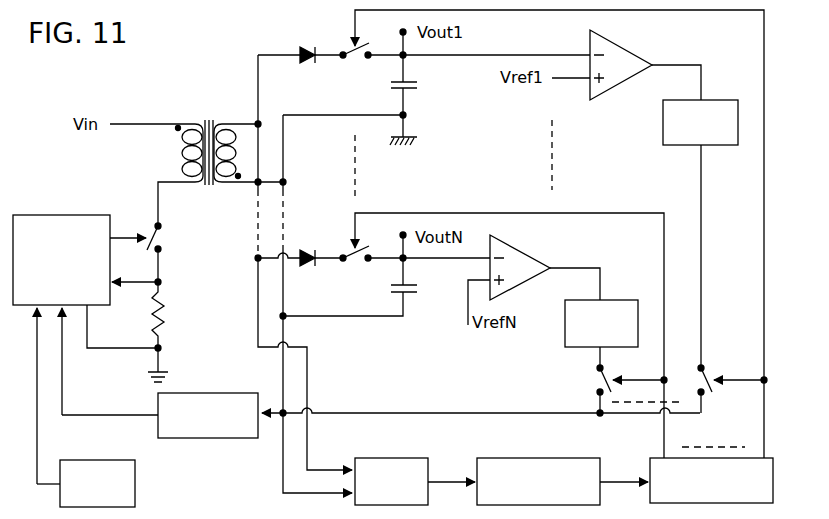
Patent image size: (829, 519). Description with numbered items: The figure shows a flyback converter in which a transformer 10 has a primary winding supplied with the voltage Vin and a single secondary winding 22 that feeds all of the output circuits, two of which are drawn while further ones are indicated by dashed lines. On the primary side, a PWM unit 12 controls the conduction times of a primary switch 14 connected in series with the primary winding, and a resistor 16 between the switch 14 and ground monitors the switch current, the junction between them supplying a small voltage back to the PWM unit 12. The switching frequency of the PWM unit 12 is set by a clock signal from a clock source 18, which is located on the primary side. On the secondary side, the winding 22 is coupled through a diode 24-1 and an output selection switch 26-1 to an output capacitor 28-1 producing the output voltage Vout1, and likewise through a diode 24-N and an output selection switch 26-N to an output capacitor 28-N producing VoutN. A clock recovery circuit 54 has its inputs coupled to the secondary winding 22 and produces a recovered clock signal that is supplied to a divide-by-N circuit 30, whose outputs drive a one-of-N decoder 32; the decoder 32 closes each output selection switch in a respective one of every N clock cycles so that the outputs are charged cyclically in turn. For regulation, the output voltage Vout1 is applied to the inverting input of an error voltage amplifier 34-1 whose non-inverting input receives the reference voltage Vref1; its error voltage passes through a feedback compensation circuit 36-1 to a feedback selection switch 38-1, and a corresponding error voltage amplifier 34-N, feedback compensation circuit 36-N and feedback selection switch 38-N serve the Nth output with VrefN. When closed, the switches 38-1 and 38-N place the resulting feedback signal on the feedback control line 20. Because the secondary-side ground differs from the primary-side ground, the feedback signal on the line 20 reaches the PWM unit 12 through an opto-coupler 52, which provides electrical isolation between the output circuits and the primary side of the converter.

The transformer 10 is at (205, 118).
The secondary winding 22 is at (226, 128).
The PWM unit 12 is at (62, 216).
The primary switch 14 is at (148, 222).
The resistor 16 is at (170, 320).
The clock source 18 is at (135, 490).
The feedback control line 20 is at (413, 413).
The diode 24-1 is at (303, 50).
The output selection switch 26-1 is at (352, 62).
The output capacitor 28-1 is at (418, 85).
The error voltage amplifier 34-1 is at (620, 52).
The feedback compensation circuit 36-1 is at (663, 130).
The feedback selection switch 38-1 is at (703, 367).
The diode 24-N is at (318, 237).
The output selection switch 26-N is at (352, 265).
The output capacitor 28-N is at (418, 288).
The error voltage amplifier 34-N is at (538, 244).
The feedback compensation circuit 36-N is at (565, 336).
The feedback selection switch 38-N is at (598, 381).
The divide-by-N circuit 30 is at (555, 458).
The 1-of-N decoder 32 is at (650, 460).
The opto-coupler 52 is at (238, 393).
The clock recovery circuit 54 is at (384, 458).